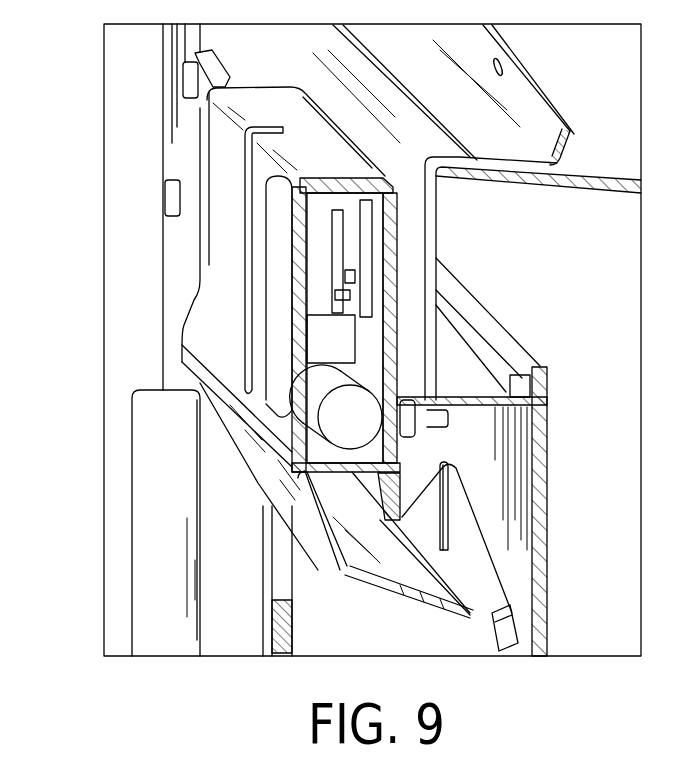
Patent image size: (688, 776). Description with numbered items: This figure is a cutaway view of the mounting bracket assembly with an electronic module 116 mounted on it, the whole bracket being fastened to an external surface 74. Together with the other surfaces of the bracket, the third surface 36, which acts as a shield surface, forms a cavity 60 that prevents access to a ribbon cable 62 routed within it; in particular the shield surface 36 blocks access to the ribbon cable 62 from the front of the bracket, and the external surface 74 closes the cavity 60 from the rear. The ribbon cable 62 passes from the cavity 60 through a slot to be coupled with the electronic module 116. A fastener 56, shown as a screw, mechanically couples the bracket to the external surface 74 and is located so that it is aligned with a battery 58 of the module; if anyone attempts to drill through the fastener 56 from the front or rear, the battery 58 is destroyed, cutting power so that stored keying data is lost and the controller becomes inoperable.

The electronic module 116 is at (173, 278).
The third surface 36 is at (258, 484).
The fastener 56 is at (407, 392).
The battery 58 is at (440, 462).
The cavity 60 is at (367, 563).
The ribbon cable 62 is at (487, 628).
The external surface 74 is at (545, 602).